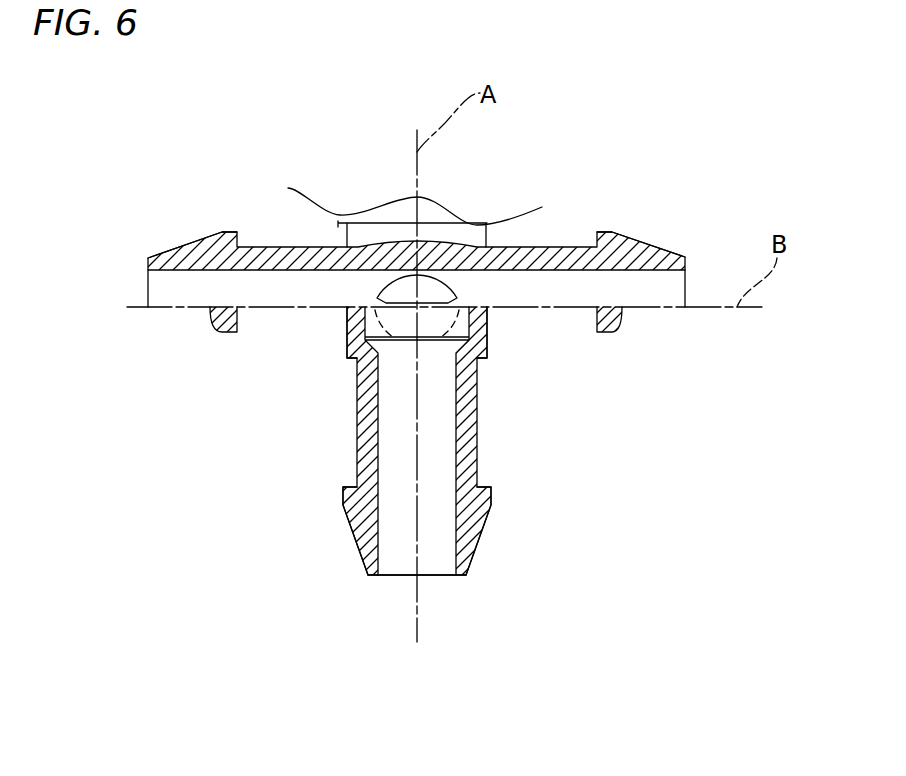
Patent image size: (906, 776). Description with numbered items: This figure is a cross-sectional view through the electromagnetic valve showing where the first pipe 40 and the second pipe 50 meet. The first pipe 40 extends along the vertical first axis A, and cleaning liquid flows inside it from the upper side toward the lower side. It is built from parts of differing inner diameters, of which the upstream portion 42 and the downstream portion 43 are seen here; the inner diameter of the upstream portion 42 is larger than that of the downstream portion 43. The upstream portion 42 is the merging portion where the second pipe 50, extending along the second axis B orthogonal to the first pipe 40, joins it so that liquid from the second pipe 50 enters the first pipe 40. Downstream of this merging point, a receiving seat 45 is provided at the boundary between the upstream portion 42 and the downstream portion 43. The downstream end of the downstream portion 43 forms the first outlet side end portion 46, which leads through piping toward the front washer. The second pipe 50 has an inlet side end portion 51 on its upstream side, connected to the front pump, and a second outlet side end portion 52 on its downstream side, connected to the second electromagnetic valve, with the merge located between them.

The first pipe 40 is at (550, 413).
The upstream portion 42 is at (493, 327).
The downstream portion 43 is at (488, 520).
The receiving seat 45 is at (378, 337).
The first outlet side end portion 46 is at (467, 575).
The second pipe 50 is at (613, 198).
The inlet side end portion 51 is at (157, 257).
The second outlet side end portion 52 is at (685, 258).